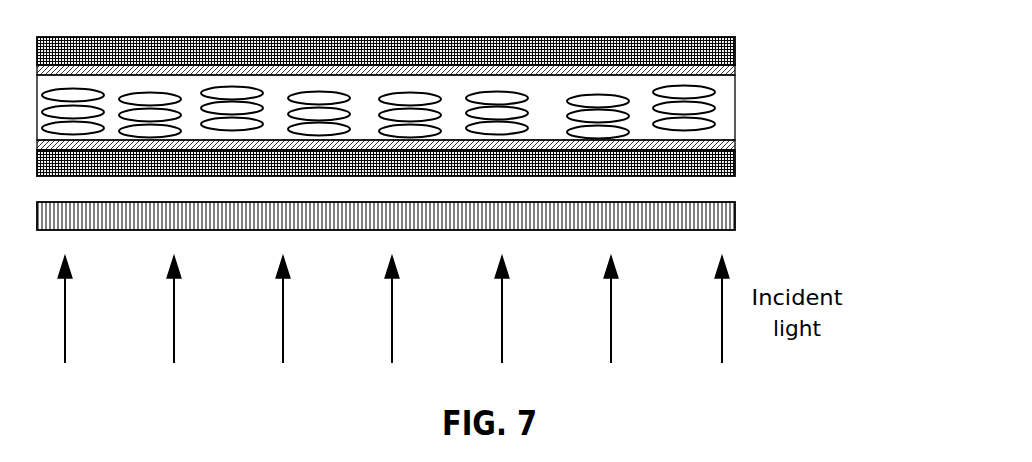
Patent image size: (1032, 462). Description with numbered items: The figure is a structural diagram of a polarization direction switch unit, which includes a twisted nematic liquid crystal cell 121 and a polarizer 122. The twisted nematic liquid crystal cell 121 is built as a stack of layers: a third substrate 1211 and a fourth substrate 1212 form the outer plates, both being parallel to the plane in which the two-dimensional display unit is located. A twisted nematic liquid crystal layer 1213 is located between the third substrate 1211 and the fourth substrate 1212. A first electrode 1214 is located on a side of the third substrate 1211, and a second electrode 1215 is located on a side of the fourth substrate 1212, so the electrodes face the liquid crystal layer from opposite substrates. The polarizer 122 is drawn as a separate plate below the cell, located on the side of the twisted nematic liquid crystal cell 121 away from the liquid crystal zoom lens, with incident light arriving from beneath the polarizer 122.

The twisted nematic liquid crystal cell 121 is at (474, 106).
The third substrate 1211 is at (438, 167).
The fourth substrate 1212 is at (736, 43).
The twisted nematic liquid crystal layer 1213 is at (736, 104).
The first electrode 1214 is at (736, 146).
The second electrode 1215 is at (736, 70).
The polarizer 122 is at (736, 213).